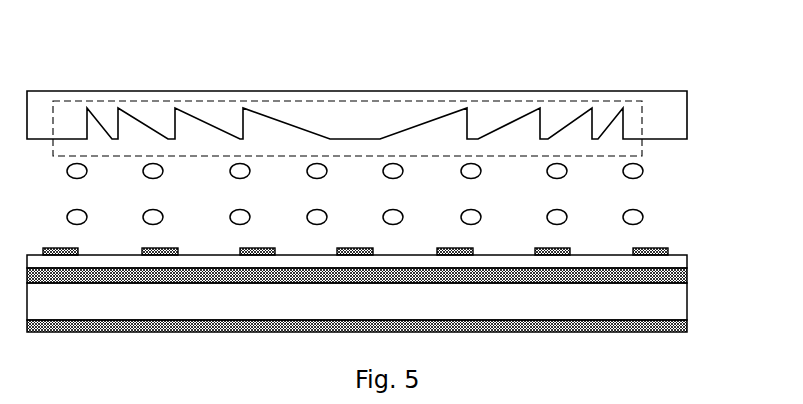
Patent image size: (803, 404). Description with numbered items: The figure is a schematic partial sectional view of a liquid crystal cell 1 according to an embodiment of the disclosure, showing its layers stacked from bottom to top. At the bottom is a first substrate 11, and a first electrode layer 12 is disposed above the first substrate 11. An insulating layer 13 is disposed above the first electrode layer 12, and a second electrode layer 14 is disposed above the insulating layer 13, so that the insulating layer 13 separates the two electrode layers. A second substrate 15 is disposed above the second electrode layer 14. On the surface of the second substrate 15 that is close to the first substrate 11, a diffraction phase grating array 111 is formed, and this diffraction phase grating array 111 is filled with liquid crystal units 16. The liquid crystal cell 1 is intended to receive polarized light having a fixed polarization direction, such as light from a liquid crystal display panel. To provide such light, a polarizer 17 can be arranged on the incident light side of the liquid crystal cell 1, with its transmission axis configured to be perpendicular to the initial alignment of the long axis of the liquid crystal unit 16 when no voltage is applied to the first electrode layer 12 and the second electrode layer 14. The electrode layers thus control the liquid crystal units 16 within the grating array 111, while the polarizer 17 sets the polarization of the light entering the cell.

The liquid crystal cell 1 is at (610, 52).
The first substrate 11 is at (677, 305).
The first electrode layer 12 is at (687, 277).
The insulating layer 13 is at (677, 263).
The second electrode layer 14 is at (668, 250).
The second substrate 15 is at (675, 103).
The liquid crystal unit 16 is at (633, 171).
The polarizer 17 is at (687, 325).
The diffraction phase grating array 111 is at (363, 112).